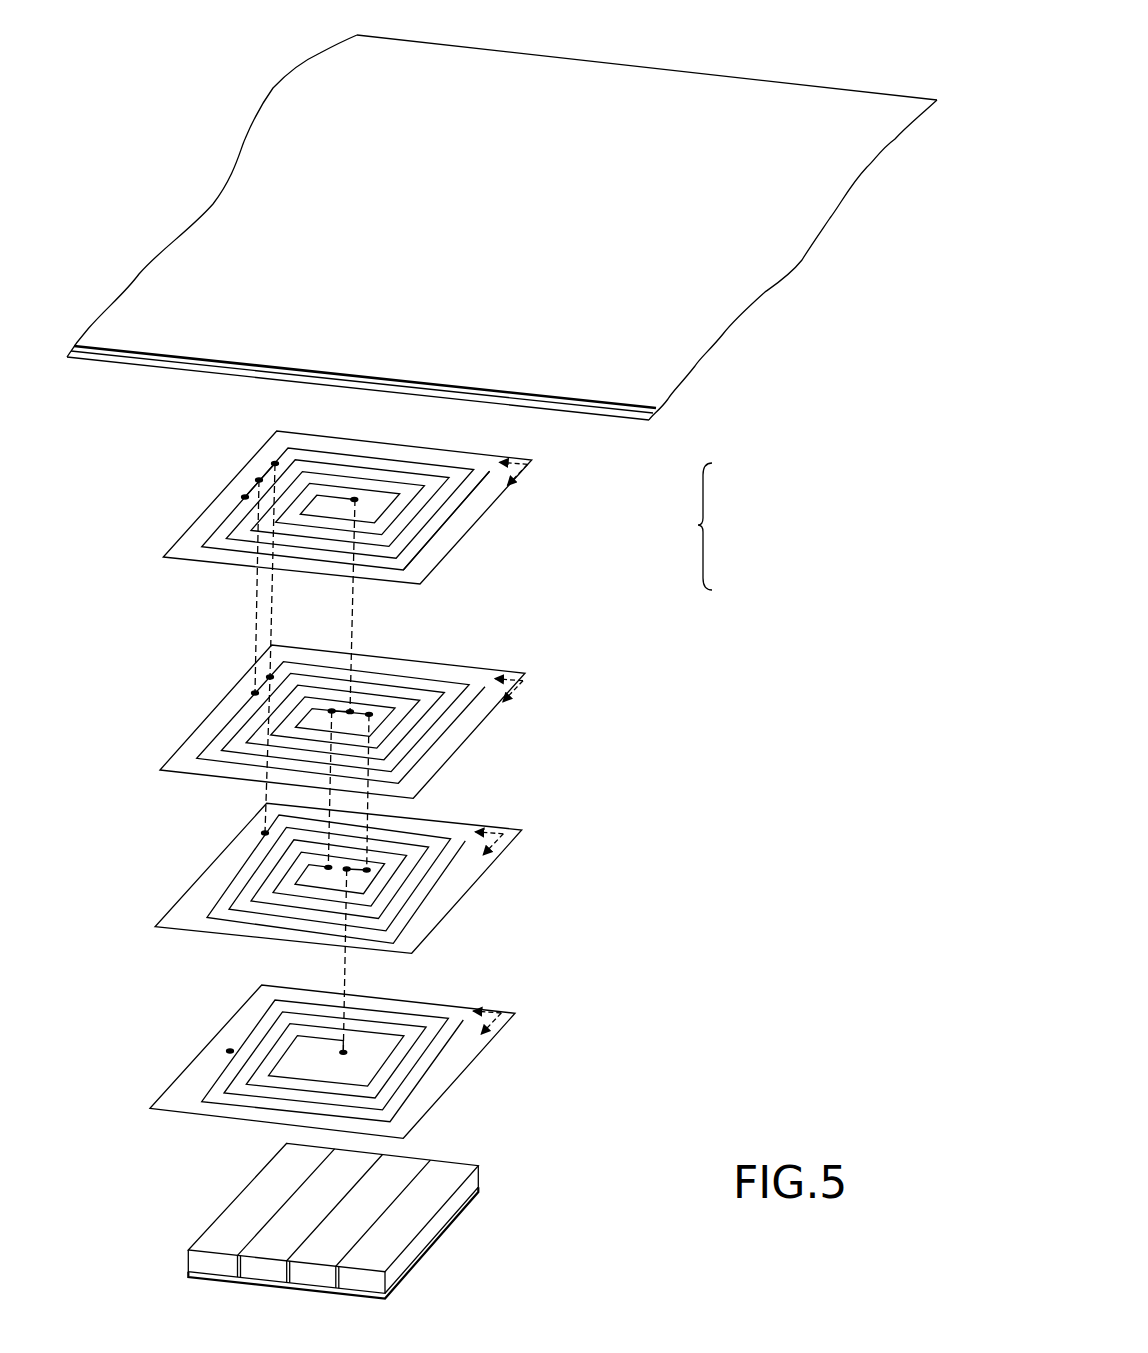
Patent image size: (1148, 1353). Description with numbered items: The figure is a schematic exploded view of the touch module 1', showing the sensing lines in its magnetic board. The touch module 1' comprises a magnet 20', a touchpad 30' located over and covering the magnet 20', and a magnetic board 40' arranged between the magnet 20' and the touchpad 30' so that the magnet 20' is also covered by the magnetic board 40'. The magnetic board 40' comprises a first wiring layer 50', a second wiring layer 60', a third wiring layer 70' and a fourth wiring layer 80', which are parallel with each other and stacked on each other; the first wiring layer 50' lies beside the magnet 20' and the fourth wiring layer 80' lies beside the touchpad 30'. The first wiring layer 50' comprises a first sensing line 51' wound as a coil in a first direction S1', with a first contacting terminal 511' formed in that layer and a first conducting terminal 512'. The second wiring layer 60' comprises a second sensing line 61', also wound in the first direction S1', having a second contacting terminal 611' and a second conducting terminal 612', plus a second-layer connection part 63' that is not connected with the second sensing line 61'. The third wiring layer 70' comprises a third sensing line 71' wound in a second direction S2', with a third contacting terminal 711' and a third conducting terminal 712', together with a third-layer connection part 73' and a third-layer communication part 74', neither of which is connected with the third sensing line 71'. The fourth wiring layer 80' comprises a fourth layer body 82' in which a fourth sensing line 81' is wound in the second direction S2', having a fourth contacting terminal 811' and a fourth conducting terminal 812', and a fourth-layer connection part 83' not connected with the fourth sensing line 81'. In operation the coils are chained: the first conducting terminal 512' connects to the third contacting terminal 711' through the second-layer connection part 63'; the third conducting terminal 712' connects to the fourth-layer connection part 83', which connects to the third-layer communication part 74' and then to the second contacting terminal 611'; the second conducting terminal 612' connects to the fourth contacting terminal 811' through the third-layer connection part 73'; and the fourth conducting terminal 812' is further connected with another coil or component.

The touch module 1' is at (647, 53).
The magnet 20' is at (326, 1220).
The touchpad 30' is at (502, 227).
The magnetic board 40' is at (708, 526).
The first wiring layer 50' is at (308, 1061).
The first sensing line 51' is at (354, 1062).
The first contacting terminal 511' is at (187, 1027).
The first conducting terminal 512' is at (407, 1014).
The second wiring layer 60' is at (315, 878).
The second sensing line 61' is at (359, 826).
The second contacting terminal 611' is at (223, 809).
The second conducting terminal 612' is at (277, 924).
The second-layer connection part 63' is at (416, 959).
The third wiring layer 70' is at (318, 721).
The third sensing line 71' is at (356, 633).
The third contacting terminal 711' is at (434, 676).
The third conducting terminal 712' is at (213, 671).
The third-layer connection part 73' is at (337, 606).
The third-layer communication part 74' is at (291, 648).
The fourth wiring layer 80' is at (325, 507).
The fourth sensing line 81' is at (346, 528).
The fourth contacting terminal 811' is at (418, 462).
The fourth conducting terminal 812' is at (203, 473).
The fourth layer body 82' is at (467, 522).
The fourth-layer connection part 83' is at (237, 460).
The first direction S1' is at (524, 910).
The second direction S2' is at (536, 560).